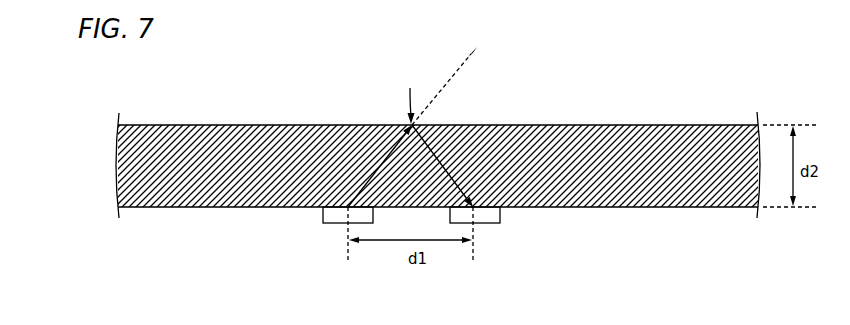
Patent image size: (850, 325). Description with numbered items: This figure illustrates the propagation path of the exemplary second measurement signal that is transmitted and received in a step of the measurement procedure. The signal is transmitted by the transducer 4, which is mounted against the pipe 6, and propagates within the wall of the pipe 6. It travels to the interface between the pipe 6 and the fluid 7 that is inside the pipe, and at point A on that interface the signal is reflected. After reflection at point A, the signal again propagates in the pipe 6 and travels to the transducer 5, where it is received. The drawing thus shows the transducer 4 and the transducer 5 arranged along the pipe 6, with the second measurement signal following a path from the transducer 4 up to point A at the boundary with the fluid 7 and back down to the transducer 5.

The transducer 4 is at (323, 218).
The transducer 5 is at (500, 215).
The pipe 6 is at (658, 192).
The fluid 7 is at (251, 87).
The point A is at (409, 97).